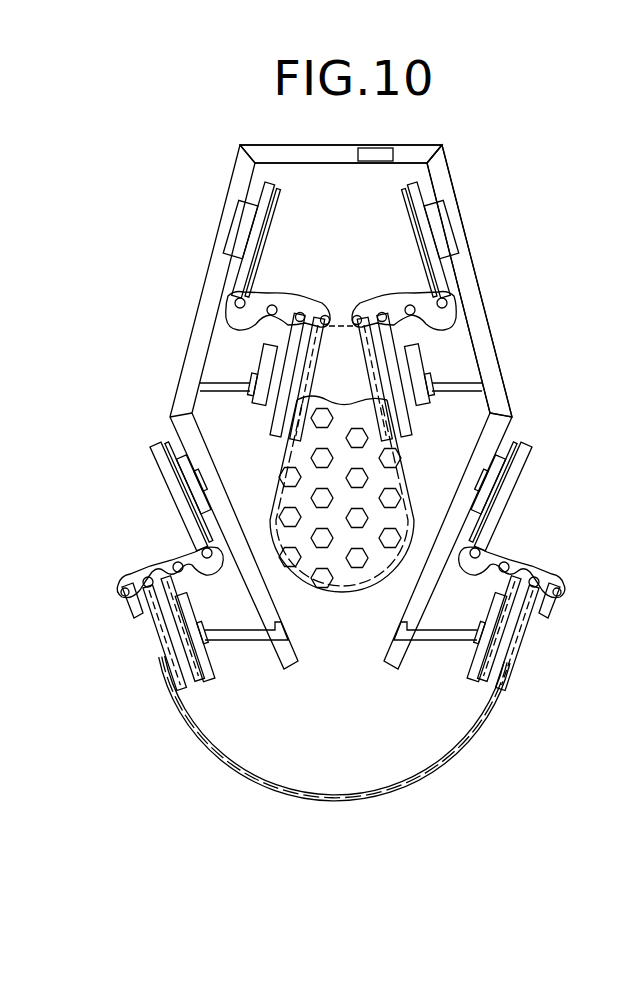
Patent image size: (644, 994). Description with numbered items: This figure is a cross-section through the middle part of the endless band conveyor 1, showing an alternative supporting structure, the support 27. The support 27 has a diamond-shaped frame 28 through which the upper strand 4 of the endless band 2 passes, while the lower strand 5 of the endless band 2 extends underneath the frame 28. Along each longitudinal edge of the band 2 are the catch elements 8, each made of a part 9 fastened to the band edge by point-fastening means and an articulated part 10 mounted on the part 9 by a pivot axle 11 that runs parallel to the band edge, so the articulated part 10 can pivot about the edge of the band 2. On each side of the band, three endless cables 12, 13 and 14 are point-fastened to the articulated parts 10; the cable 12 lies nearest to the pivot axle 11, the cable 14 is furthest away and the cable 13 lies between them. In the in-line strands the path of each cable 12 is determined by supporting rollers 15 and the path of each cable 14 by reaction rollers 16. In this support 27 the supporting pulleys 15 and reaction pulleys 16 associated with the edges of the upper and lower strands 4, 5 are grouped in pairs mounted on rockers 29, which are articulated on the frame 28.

The endless band conveyor 1 is at (512, 268).
The endless band 2 is at (256, 487).
The upper strand 4 is at (408, 462).
The lower strand 5 is at (212, 748).
The catch element 8 is at (283, 292).
The part fastened to the edge of the band 9 is at (134, 607).
The articulated part 10 is at (160, 561).
The pivot axle 11 is at (126, 589).
The endless cable 12 is at (283, 337).
The endless cable 13 is at (233, 327).
The endless cable 14 is at (236, 301).
The supporting roller 15 is at (270, 426).
The reaction roller 16 is at (259, 204).
The support 27 is at (467, 240).
The diamond-shaped frame 28 is at (485, 325).
The rocker 29 is at (447, 216).